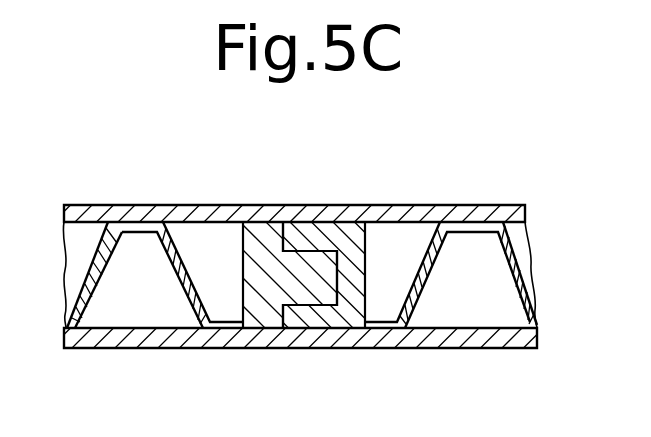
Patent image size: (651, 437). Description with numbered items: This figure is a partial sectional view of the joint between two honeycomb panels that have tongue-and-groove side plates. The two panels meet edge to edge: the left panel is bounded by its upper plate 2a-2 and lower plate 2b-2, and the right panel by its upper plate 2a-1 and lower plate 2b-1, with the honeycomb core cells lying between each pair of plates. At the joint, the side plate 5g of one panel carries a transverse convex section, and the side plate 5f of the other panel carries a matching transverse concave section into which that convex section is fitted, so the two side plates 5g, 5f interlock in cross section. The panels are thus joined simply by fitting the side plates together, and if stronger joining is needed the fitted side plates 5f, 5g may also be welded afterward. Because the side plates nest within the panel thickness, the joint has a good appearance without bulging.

The upper plate portion 2a-2 is at (216, 212).
The upper plate portion 2a-1 is at (437, 212).
The lower plate portion 2b-2 is at (127, 340).
The lower plate portion 2b-1 is at (440, 342).
The side plate 5g is at (263, 290).
The side plate 5f is at (348, 303).